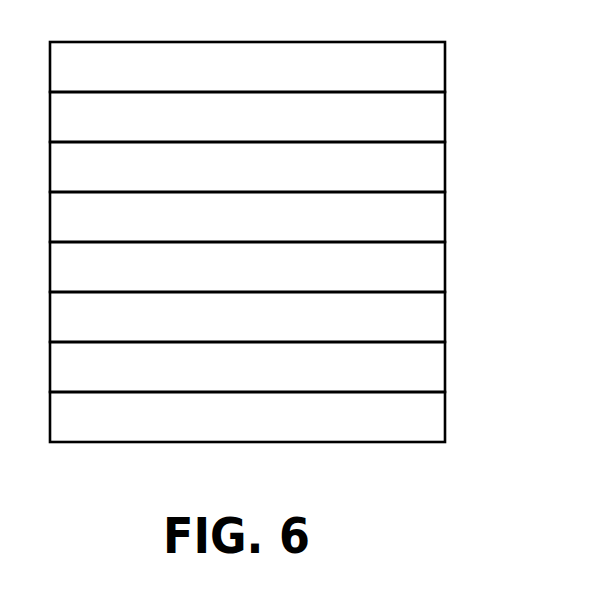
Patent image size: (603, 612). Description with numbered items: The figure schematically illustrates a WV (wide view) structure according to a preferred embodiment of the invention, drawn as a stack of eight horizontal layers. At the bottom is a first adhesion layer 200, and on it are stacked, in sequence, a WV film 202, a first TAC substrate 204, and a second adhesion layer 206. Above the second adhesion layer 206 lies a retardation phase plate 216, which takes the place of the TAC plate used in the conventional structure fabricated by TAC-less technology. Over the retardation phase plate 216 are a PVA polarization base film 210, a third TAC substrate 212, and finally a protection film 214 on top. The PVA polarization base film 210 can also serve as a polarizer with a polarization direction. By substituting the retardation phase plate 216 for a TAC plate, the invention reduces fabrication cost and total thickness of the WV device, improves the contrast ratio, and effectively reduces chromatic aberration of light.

The protection film 214 is at (445, 70).
The third TAC substrate 212 is at (445, 120).
The PVA polarization base film 210 is at (445, 170).
The retardation phase plate 216 is at (445, 220).
The second adhesion layer 206 is at (445, 270).
The first TAC substrate 204 is at (445, 320).
The WV film 202 is at (445, 370).
The first adhesion layer 200 is at (445, 420).